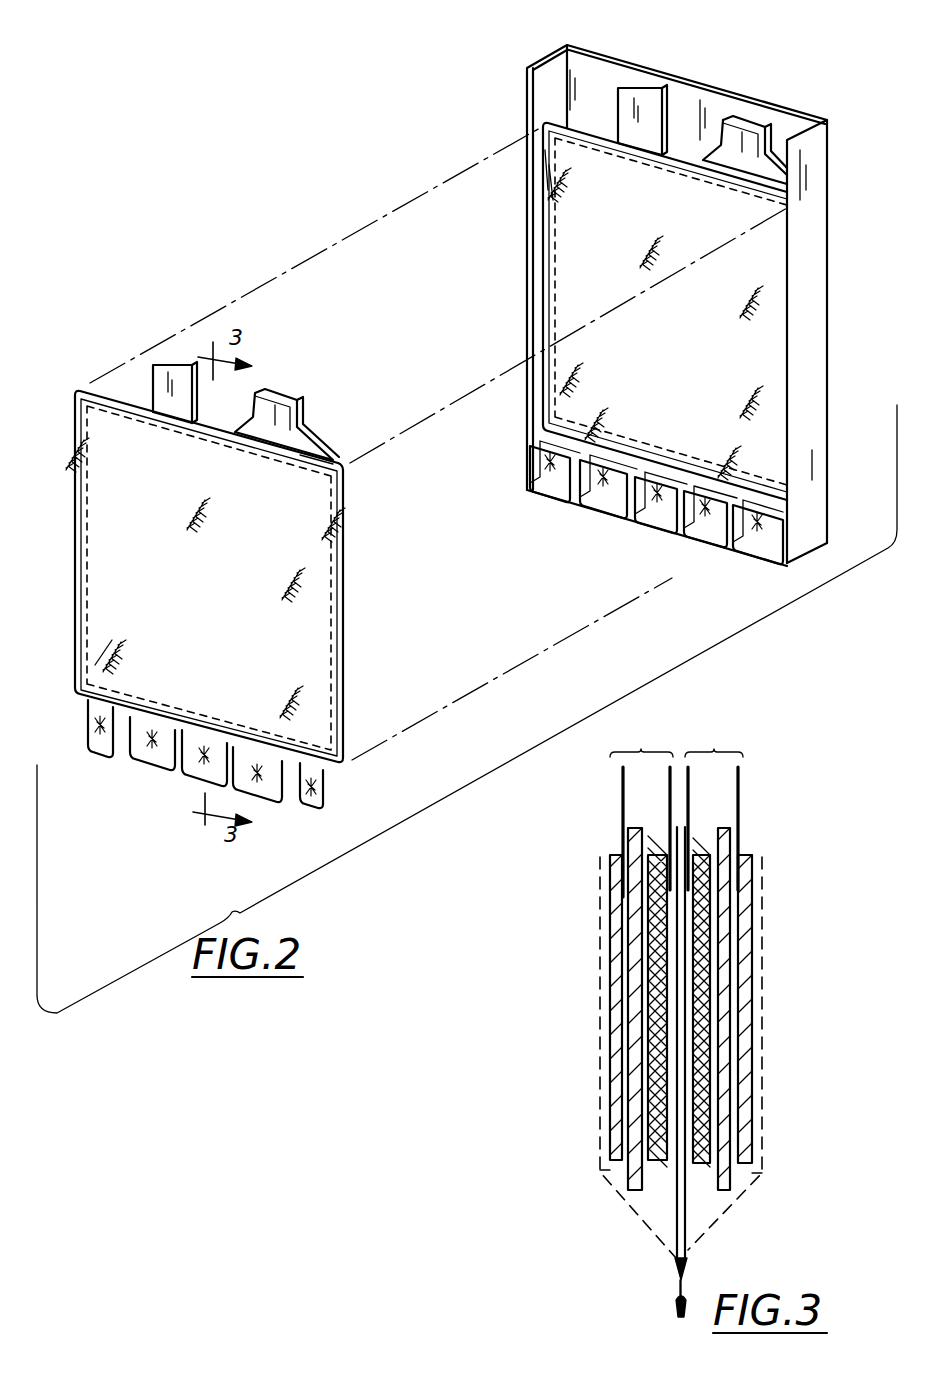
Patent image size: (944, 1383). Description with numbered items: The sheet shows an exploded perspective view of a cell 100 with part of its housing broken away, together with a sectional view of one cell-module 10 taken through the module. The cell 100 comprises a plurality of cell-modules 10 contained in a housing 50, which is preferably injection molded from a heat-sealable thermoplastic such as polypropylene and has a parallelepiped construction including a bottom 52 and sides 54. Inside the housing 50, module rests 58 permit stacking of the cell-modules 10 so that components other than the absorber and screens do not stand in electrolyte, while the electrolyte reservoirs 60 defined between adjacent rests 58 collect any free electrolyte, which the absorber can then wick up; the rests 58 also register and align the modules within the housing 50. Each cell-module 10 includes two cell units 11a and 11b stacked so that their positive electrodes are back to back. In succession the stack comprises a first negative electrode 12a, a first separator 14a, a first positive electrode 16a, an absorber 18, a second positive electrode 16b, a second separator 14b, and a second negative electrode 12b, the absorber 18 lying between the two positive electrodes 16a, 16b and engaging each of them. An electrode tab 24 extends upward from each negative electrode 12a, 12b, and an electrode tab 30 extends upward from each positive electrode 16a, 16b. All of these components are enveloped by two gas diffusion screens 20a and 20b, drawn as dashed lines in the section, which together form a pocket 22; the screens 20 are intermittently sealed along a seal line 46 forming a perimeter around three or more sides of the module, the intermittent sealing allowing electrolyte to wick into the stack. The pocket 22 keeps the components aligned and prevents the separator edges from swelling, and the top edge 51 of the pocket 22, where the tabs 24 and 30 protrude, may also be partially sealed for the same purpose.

In FIG. 2, the cell-module 10 is at (425, 408).
In FIG. 3, the cell-module 10 is at (691, 1022).
In FIG. 3, the cell unit 11a is at (603, 968).
In FIG. 3, the cell unit 11b is at (767, 968).
In FIG. 3, the first negative electrode 12a is at (610, 912).
In FIG. 3, the second negative electrode 12b is at (753, 915).
In FIG. 3, the first separator 14a is at (628, 1028).
In FIG. 3, the second separator 14b is at (730, 945).
In FIG. 3, the first positive electrode 16a is at (648, 1105).
In FIG. 3, the second positive electrode 16b is at (702, 1022).
In FIG. 3, the absorber 18 is at (675, 1227).
In FIG. 2, the gas diffusion screen 20 is at (100, 655).
In FIG. 3, the gas diffusion screen 20a is at (600, 1170).
In FIG. 3, the gas diffusion screen 20b is at (753, 1183).
In FIG. 2, the pocket 22 is at (345, 583).
In FIG. 3, the pocket 22 is at (692, 1247).
In FIG. 2, the electrode tab 24 is at (305, 397).
In FIG. 3, the electrode tab 24 is at (623, 780).
In FIG. 2, the electrode tab 30 is at (171, 362).
In FIG. 3, the electrode tab 30 is at (670, 792).
In FIG. 2, the seal line 46 is at (335, 683).
In FIG. 2, the housing 50 is at (672, 320).
In FIG. 2, the top edge 51 is at (320, 467).
In FIG. 2, the bottom 52 is at (677, 511).
In FIG. 2, the sides 54 is at (727, 88).
In FIG. 2, the module rests 58 is at (731, 475).
In FIG. 2, the electrolyte reservoirs 60 is at (753, 541).
In FIG. 2, the cell 100 is at (687, 320).